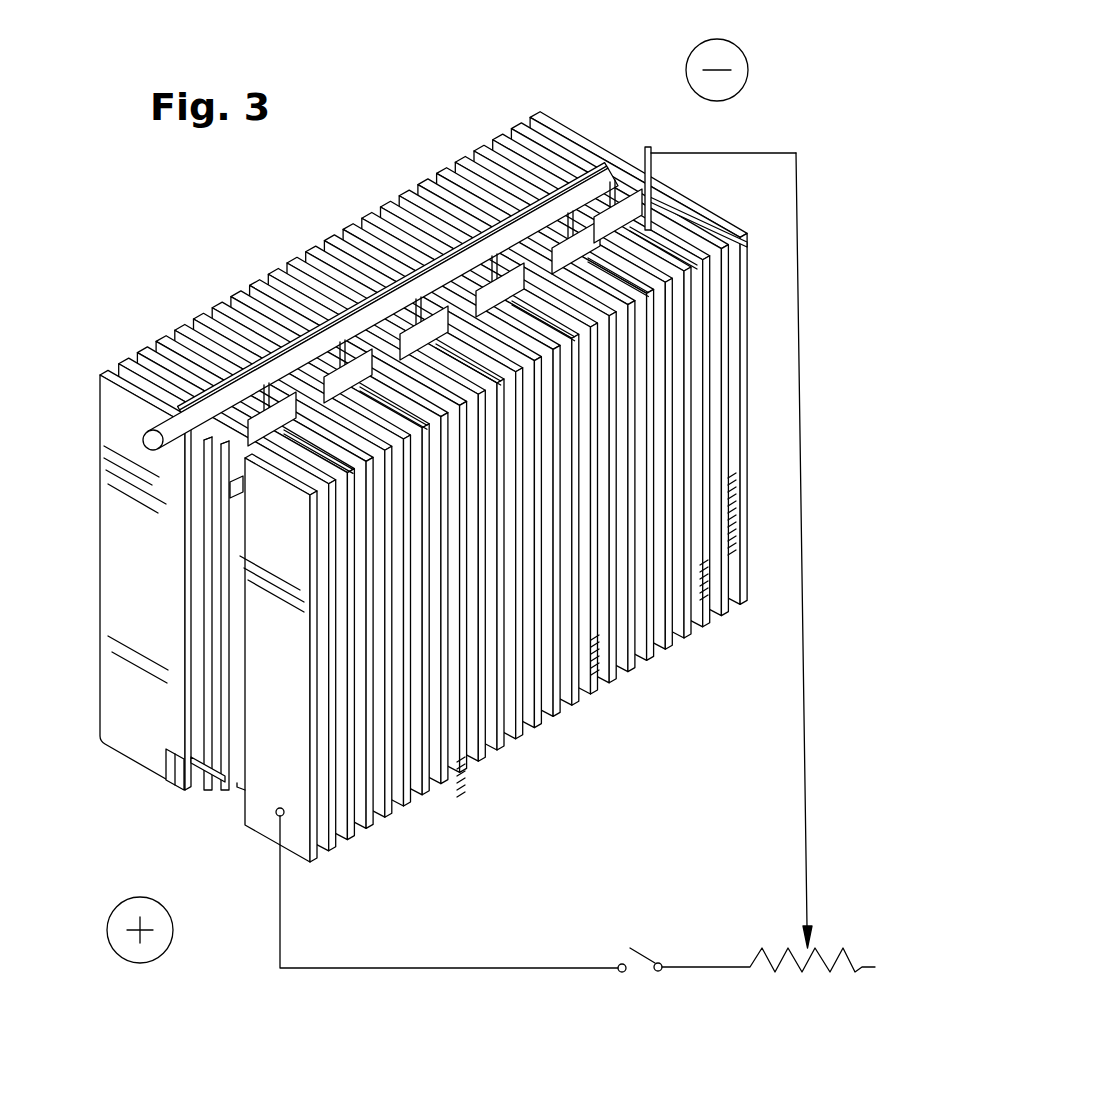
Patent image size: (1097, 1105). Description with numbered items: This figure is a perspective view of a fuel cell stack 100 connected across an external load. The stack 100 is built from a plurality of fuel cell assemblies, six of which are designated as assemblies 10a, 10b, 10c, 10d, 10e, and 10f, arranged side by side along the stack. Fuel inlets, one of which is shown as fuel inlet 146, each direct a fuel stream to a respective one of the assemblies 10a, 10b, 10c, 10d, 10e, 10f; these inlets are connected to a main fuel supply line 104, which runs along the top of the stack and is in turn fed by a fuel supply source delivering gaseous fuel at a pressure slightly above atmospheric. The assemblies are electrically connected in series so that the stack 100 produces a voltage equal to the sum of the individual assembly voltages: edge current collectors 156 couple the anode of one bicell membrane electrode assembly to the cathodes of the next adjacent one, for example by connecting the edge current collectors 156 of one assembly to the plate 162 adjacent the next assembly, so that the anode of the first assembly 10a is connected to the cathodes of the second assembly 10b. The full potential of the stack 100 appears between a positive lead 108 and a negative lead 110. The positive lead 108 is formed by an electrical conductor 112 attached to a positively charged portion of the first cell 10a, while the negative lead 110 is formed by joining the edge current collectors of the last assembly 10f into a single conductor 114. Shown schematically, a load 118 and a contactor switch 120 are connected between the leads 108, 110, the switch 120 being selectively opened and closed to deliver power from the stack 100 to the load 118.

The fuel cell stack 100 is at (432, 447).
The first fuel cell assembly 10a is at (418, 613).
The second fuel cell assembly 10b is at (320, 569).
The third fuel cell assembly 10c is at (394, 526).
The fourth fuel cell assembly 10d is at (468, 482).
The fifth fuel cell assembly 10e is at (543, 440).
The last fuel cell assembly 10f is at (619, 397).
The main fuel supply line 104 is at (158, 432).
The fuel inlet 146 is at (214, 455).
The edge current collector 156 is at (631, 196).
The plate 162 is at (672, 189).
The negative lead 110 is at (755, 139).
The single conductor 114 is at (802, 320).
The load 118 is at (838, 966).
The contactor switch 120 is at (643, 972).
The electrical conductor 112 is at (280, 970).
The positive lead 108 is at (245, 934).